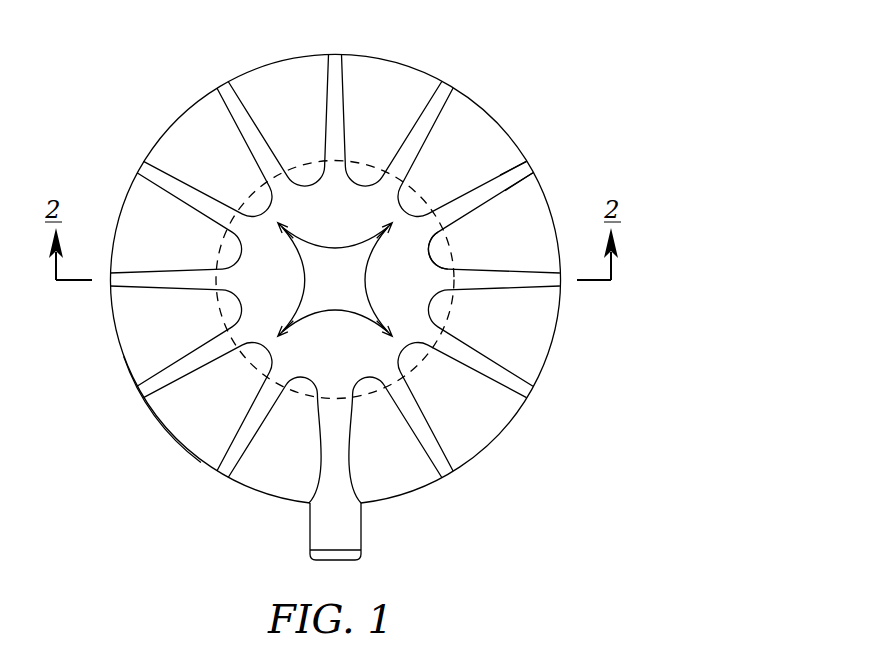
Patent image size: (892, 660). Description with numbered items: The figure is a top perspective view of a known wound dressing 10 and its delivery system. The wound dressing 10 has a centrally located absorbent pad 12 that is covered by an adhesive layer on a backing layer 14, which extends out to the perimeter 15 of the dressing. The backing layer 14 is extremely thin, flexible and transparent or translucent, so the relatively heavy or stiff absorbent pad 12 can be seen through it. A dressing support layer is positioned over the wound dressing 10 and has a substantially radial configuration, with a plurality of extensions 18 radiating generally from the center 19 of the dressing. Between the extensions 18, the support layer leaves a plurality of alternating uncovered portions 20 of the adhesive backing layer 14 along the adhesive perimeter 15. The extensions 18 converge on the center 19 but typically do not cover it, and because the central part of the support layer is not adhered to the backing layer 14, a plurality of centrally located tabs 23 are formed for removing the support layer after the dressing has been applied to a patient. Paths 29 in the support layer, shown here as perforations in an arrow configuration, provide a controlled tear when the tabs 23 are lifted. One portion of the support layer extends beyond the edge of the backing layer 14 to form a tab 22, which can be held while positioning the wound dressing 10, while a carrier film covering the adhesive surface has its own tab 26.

The wound dressing 10 is at (476, 50).
The absorbent pad 12 is at (452, 245).
The backing layer 14 is at (554, 327).
The perimeter 15 is at (188, 453).
The extensions 18 is at (532, 171).
The center 19 is at (324, 285).
The uncovered portions 20 is at (401, 460).
The tab 22 is at (350, 524).
The centrally located tabs 23 is at (322, 219).
The tab 26 is at (356, 552).
The paths 29 is at (399, 338).